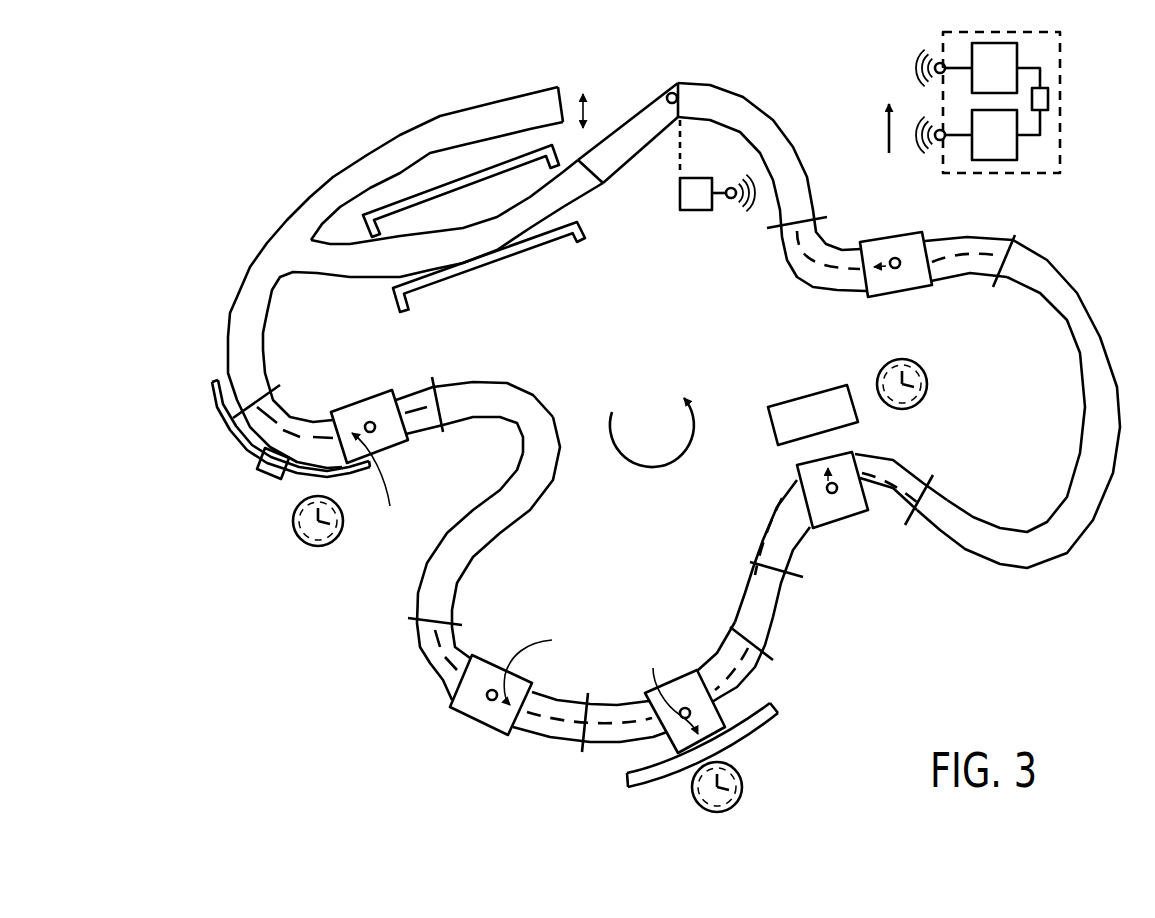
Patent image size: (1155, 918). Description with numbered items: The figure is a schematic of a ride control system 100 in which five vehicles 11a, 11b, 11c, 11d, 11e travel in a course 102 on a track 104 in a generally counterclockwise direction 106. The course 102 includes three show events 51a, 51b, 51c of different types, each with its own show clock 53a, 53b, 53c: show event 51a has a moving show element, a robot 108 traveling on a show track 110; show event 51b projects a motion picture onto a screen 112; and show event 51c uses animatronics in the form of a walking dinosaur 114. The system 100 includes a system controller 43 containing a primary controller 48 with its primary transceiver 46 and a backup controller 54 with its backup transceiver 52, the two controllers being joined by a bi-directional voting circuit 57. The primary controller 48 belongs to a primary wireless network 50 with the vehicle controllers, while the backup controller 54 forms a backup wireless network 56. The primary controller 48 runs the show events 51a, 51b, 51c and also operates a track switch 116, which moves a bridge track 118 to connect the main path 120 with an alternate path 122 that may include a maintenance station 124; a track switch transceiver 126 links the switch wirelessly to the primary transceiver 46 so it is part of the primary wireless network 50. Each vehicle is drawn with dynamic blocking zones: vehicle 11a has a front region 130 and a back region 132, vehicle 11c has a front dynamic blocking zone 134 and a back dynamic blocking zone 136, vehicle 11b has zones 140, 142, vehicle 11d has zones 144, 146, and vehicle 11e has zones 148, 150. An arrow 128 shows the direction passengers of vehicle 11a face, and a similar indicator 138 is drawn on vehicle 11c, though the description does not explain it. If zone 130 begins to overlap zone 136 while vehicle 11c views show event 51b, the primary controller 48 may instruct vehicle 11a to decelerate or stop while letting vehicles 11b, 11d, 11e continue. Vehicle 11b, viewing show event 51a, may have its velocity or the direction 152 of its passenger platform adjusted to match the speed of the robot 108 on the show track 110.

The ride control system 100 is at (125, 72).
The course 102 is at (933, 653).
The track 104 is at (1062, 555).
The counterclockwise direction 106 is at (649, 467).
The robot 108 is at (260, 461).
The show track 110 is at (303, 480).
The screen 112 is at (779, 714).
The walking dinosaur 114 is at (781, 400).
The track switch 116 is at (672, 91).
The bridge track 118 is at (616, 117).
The main path 120 is at (418, 118).
The alternate path 122 is at (357, 279).
The maintenance station 124 is at (491, 278).
The track switch transceiver 126 is at (693, 212).
The arrow 128 is at (545, 667).
The front region 130 is at (590, 701).
The back region 132 is at (427, 666).
The front dynamic blocking zone 134 is at (748, 677).
The back dynamic blocking zone 136 is at (615, 704).
The gate direction indicator 138 is at (667, 686).
The front dynamic blocking zone 140 is at (412, 400).
The back dynamic blocking zone 142 is at (289, 420).
The front dynamic blocking zone 144 is at (899, 474).
The back dynamic blocking zone 146 is at (782, 520).
The front dynamic blocking zone 148 is at (808, 268).
The back dynamic blocking zone 150 is at (966, 245).
The direction 152 is at (380, 485).
The vehicle 11a is at (481, 720).
The vehicle 11b is at (395, 450).
The vehicle 11c is at (692, 671).
The vehicle 11d is at (843, 522).
The vehicle 11e is at (880, 240).
The system controller 43 is at (1060, 53).
The primary transceiver 46 is at (955, 64).
The primary controller 48 is at (995, 43).
The primary wireless network 50 is at (968, 91).
The backup transceiver 52 is at (954, 138).
The backup controller 54 is at (1017, 152).
The backup wireless network 56 is at (886, 122).
The bi-directional voting circuit 57 is at (1048, 97).
The show event 51a is at (271, 478).
The show event 51b is at (765, 738).
The show event 51c is at (804, 383).
The show clock 53a is at (317, 548).
The show clock 53b is at (738, 803).
The show clock 53c is at (922, 402).